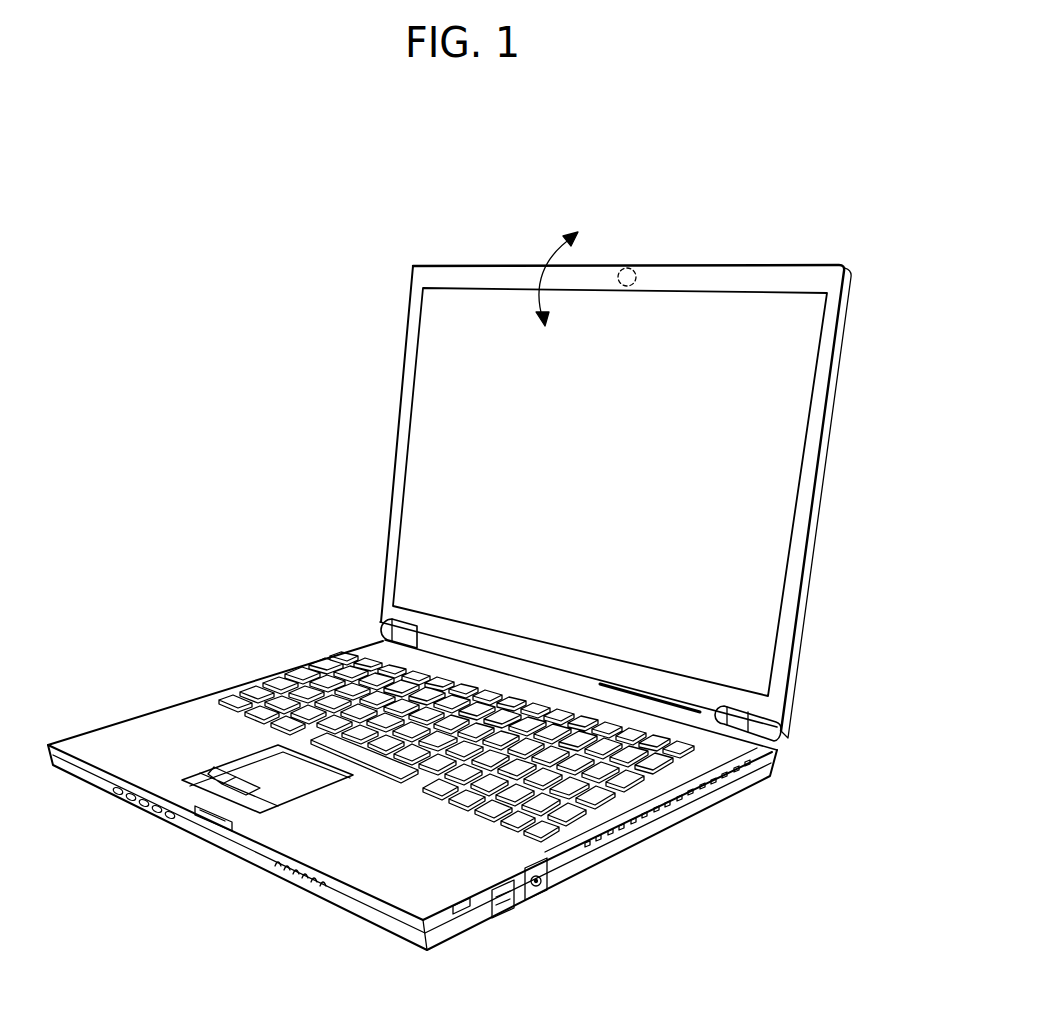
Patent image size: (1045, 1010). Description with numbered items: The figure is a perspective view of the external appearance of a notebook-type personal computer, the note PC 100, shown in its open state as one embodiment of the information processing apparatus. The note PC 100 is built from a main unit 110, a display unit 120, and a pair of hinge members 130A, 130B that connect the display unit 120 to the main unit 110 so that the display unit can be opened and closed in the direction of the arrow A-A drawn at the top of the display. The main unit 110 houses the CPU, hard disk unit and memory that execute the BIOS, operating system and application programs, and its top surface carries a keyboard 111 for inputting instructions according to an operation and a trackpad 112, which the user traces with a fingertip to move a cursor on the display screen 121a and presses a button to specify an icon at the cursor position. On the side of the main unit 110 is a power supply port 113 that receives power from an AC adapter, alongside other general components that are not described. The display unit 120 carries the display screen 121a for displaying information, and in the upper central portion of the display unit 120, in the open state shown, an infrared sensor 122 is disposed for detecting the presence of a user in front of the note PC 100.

The note PC 100 is at (763, 206).
The main unit 110 is at (106, 720).
The keyboard 111 is at (320, 691).
The trackpad 112 is at (248, 773).
The power supply port 113 is at (552, 890).
The display unit 120 is at (408, 309).
The display screen 121a is at (440, 330).
The infrared sensor 122 is at (632, 264).
The hinge member 130A is at (732, 712).
The hinge member 130B is at (400, 628).